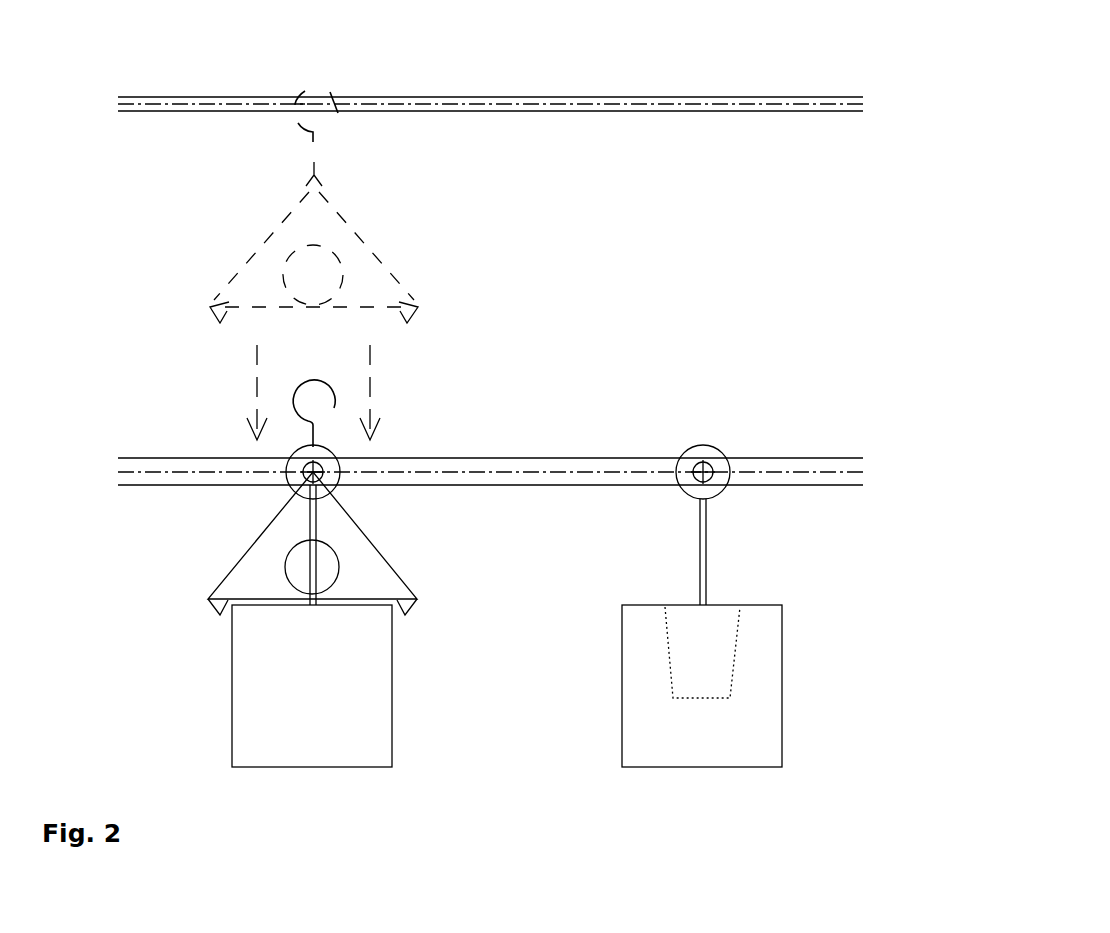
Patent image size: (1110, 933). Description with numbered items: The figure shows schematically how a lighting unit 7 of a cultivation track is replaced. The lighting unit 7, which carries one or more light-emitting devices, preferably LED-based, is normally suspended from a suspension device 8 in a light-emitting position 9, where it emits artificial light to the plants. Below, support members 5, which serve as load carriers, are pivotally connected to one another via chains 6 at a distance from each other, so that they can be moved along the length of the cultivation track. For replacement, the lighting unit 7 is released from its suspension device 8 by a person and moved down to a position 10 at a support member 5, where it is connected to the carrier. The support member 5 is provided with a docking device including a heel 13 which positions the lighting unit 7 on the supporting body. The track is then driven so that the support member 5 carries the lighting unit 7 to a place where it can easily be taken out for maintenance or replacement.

The support member 5 is at (378, 707).
The chain 6 is at (508, 476).
The lighting unit 7 is at (375, 562).
The suspension device 8 is at (475, 104).
The light-emitting position 9 is at (155, 267).
The position at support member 10 is at (178, 640).
The heel 13 is at (218, 613).